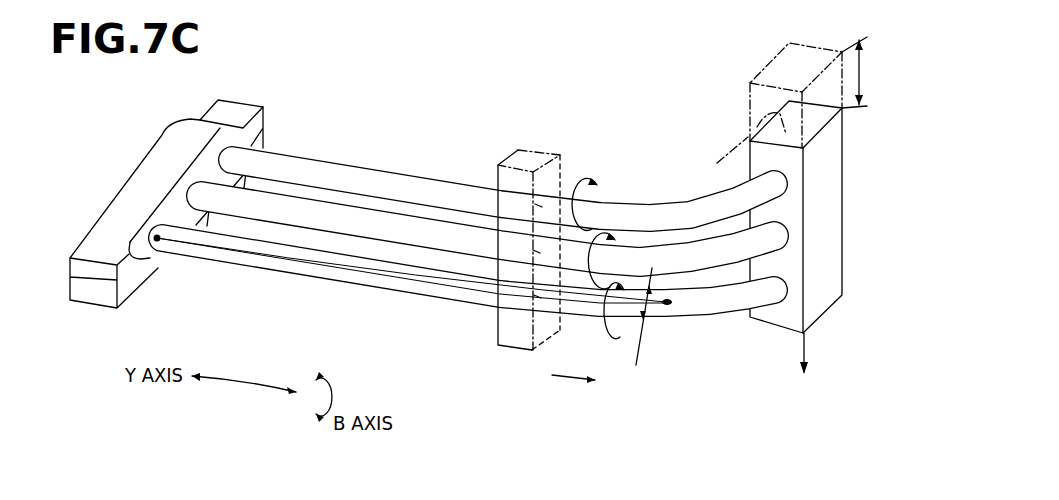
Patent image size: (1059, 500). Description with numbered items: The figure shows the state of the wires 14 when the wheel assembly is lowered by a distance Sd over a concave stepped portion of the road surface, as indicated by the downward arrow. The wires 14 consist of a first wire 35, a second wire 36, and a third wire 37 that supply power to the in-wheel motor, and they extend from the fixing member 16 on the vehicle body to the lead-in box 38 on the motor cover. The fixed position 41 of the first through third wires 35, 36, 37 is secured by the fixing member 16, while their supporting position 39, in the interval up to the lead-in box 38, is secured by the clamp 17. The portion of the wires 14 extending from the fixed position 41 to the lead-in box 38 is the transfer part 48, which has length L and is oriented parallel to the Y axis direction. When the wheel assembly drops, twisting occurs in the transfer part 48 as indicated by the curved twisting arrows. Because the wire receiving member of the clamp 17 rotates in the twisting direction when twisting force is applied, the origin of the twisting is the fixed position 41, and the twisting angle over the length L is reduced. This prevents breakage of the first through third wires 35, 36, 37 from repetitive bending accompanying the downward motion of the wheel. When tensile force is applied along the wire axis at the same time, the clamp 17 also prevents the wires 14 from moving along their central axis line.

The wires 14 is at (468, 203).
The fixing member 16 is at (274, 91).
The clamp 17 is at (527, 147).
The first wire 35 is at (700, 197).
The second wire 36 is at (703, 270).
The third wire 37 is at (737, 312).
The lead-in box 38 is at (778, 50).
The supporting position 39 is at (541, 298).
The fixed position 41 is at (157, 237).
The transfer part 48 is at (381, 213).